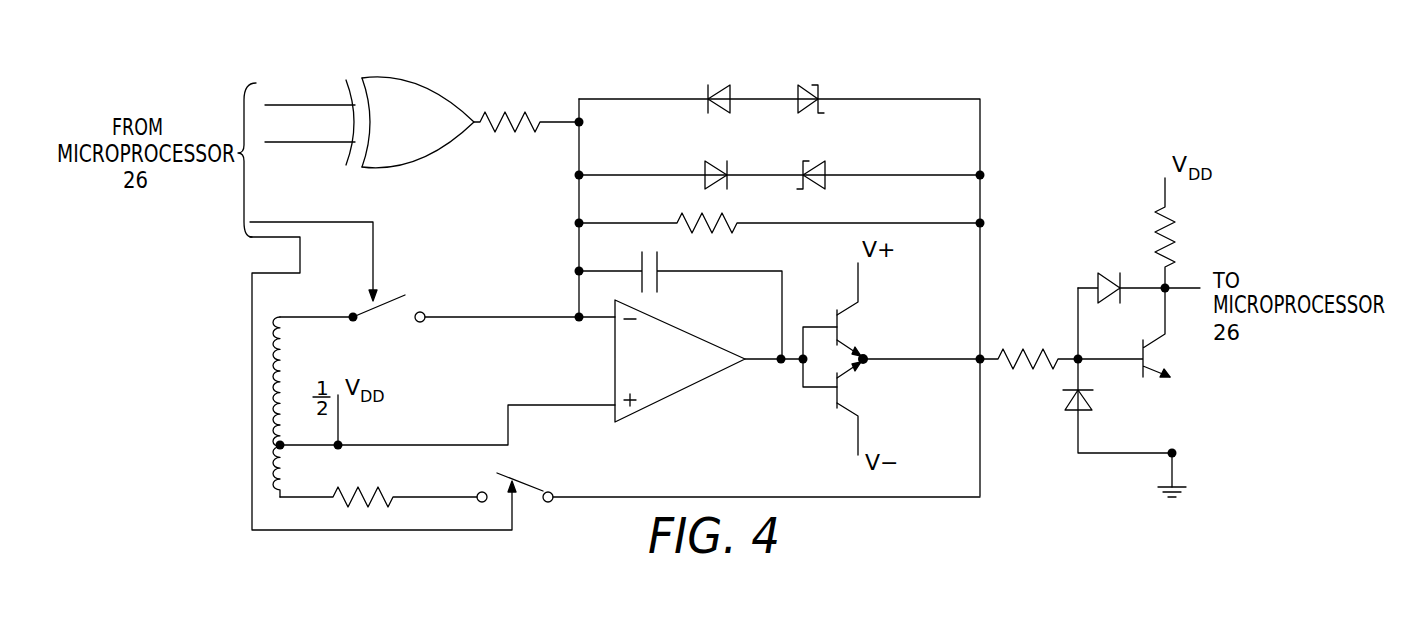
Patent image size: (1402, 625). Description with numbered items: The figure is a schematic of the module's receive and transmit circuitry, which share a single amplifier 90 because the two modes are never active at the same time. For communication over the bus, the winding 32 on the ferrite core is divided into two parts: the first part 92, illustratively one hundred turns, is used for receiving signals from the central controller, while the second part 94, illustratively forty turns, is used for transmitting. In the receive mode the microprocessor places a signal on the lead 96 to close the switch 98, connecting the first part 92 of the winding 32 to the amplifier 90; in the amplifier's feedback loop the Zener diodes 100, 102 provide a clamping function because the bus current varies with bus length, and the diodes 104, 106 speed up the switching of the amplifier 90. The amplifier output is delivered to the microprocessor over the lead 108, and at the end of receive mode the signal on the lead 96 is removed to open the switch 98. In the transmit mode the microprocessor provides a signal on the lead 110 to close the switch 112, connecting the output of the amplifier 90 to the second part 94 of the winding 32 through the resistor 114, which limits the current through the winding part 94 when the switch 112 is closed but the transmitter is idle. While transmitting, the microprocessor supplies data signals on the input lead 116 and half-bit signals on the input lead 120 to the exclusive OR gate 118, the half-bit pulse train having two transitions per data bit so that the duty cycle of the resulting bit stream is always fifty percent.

The input lead 116 is at (325, 107).
The input lead 120 is at (338, 145).
The exclusive OR gate 118 is at (424, 100).
The diode 104 is at (714, 90).
The Zener diode 100 is at (806, 92).
The diode 106 is at (718, 165).
The Zener diode 102 is at (808, 168).
The amplifier 90 is at (678, 393).
The lead 96 is at (300, 222).
The lead 110 is at (268, 237).
The winding 32 is at (313, 386).
The first part of the winding 92 is at (278, 362).
The second part of the winding 94 is at (278, 474).
The switch 98 is at (384, 316).
The resistor 114 is at (373, 483).
The switch 112 is at (521, 472).
The lead 108 is at (1188, 288).